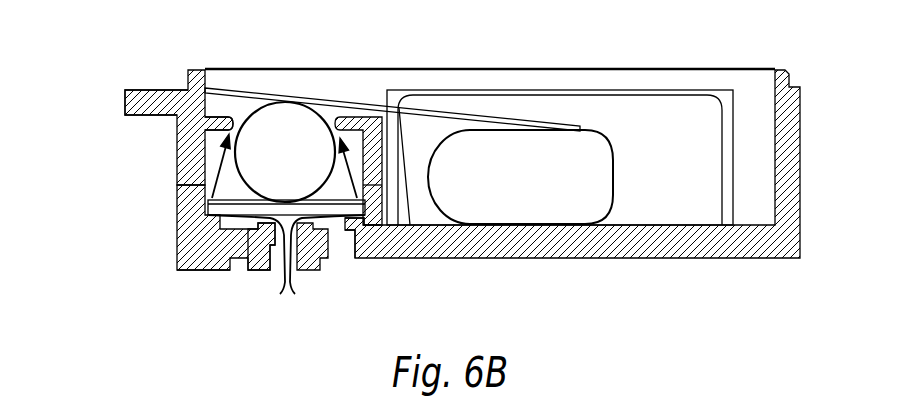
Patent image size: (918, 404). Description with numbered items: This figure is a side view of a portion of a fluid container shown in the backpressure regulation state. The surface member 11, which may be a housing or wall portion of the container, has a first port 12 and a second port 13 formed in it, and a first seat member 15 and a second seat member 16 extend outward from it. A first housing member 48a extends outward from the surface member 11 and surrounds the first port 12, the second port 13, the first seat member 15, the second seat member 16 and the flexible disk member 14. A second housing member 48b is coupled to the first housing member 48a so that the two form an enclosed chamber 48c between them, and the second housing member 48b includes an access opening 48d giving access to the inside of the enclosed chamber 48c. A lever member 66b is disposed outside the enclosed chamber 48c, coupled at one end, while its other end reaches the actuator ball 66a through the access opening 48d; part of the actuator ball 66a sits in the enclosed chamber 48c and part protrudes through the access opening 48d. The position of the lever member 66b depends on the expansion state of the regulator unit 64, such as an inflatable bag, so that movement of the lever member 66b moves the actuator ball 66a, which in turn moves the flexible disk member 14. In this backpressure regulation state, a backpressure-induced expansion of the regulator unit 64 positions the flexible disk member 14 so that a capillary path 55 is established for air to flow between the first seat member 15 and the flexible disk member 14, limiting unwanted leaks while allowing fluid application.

The surface member 11 is at (209, 270).
The first port 12 is at (342, 250).
The second port 13 is at (283, 262).
The flexible disk member 14 is at (210, 202).
The first seat member 15 is at (352, 218).
The second seat member 16 is at (262, 255).
The first housing member 48a is at (177, 245).
The second housing member 48b is at (177, 151).
The enclosed chamber 48c is at (177, 173).
The access opening 48d is at (238, 122).
The capillary path 55 is at (290, 265).
The regulator unit 64 is at (540, 210).
The actuator ball 66a is at (272, 122).
The lever member 66b is at (316, 92).